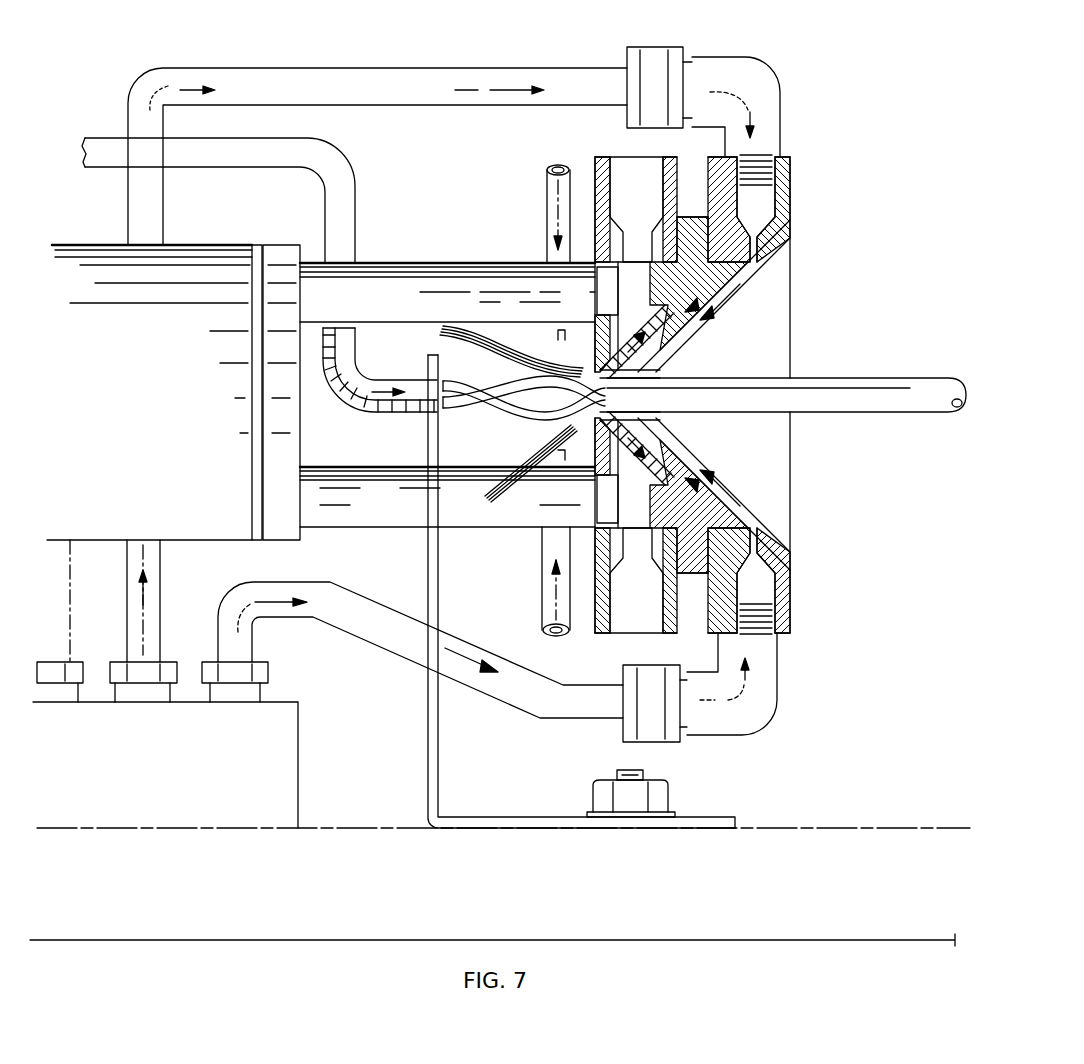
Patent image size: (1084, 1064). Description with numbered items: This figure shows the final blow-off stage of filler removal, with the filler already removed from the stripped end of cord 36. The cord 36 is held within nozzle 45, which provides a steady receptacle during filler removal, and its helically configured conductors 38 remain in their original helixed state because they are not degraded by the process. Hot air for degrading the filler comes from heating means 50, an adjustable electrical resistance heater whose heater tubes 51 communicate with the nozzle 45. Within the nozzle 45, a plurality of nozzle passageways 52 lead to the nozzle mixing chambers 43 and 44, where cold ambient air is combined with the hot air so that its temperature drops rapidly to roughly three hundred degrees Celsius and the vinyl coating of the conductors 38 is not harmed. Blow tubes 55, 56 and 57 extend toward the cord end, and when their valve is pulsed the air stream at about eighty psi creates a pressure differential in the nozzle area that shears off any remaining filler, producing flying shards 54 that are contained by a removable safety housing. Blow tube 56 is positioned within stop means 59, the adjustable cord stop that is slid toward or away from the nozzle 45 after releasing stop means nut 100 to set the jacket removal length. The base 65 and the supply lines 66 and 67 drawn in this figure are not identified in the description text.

The rod / mandrel 36 is at (840, 411).
The twisted strands 38 is at (500, 420).
The upper annular channel cone 43 is at (658, 322).
The lower annular channel cone 44 is at (668, 468).
The nozzle block assembly 45 is at (800, 370).
The vessel 50 is at (137, 406).
The feed pipes 51 is at (376, 313).
The inclined passages 52 is at (736, 288).
The fiber strands 54 is at (529, 356).
The upper inlet tube 55 is at (540, 190).
The elbow conduit 56 is at (392, 372).
The lower inlet tube 57 is at (540, 600).
The support rod 59 is at (476, 356).
The base 65 is at (165, 785).
The supply line 66 is at (378, 103).
The supply line 67 is at (567, 720).
The mounting nut 100 is at (670, 786).